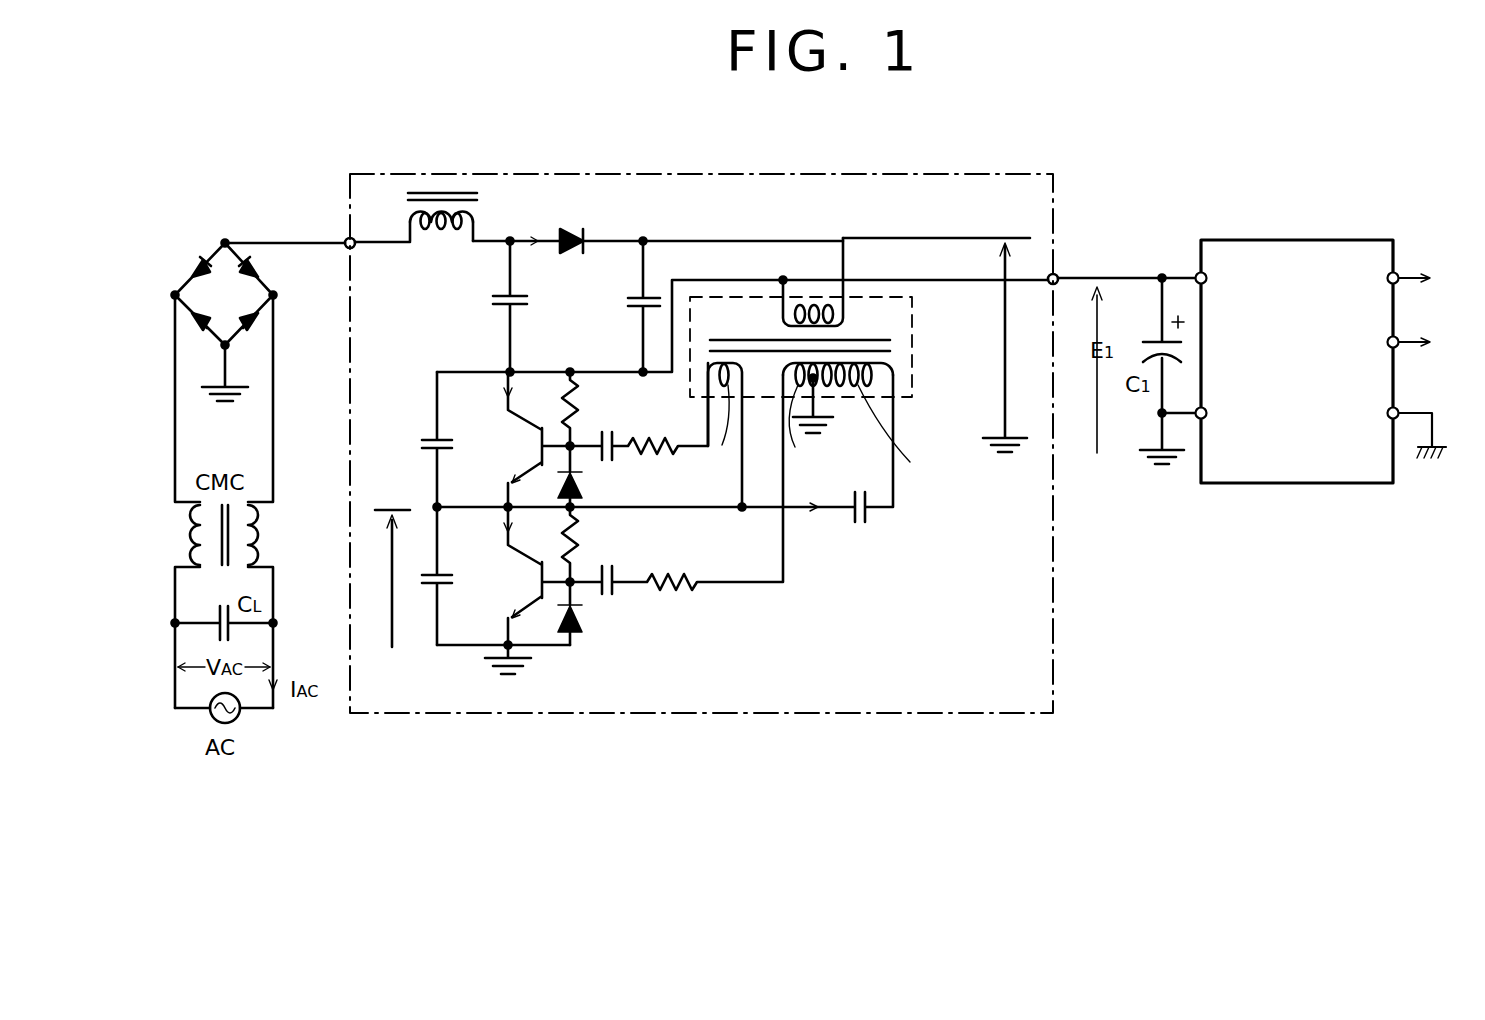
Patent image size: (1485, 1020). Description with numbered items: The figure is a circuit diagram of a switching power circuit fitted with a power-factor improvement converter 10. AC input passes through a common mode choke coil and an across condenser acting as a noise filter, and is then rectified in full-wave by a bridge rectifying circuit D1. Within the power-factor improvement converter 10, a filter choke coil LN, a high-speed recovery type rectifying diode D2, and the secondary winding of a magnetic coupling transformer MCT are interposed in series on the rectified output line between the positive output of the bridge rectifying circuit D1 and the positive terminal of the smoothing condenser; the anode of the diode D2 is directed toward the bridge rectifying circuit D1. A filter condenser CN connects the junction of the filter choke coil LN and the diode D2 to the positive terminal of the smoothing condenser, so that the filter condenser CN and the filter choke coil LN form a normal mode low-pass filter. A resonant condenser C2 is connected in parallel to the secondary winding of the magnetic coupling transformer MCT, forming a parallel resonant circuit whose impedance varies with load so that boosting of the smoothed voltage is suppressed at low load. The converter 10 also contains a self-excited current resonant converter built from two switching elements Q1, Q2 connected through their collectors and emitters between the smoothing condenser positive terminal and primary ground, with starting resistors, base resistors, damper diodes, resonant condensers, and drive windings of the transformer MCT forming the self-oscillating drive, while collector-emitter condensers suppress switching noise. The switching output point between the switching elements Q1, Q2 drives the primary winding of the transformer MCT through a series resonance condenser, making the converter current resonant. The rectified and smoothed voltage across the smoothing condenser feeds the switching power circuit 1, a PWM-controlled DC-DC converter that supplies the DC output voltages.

The power-factor improvement converter 10 is at (437, 174).
The switching power circuit 1 is at (1294, 240).
The bridge rectifying circuit D1 is at (224, 321).
The filter choke coil LN is at (446, 237).
The high-speed recovery type rectifying diode D2 is at (579, 224).
The filter condenser CN is at (488, 306).
The resonant condenser C2 is at (625, 306).
The switching element Q1 is at (537, 439).
The switching element Q2 is at (537, 576).
The magnetic coupling transformer MCT is at (826, 372).